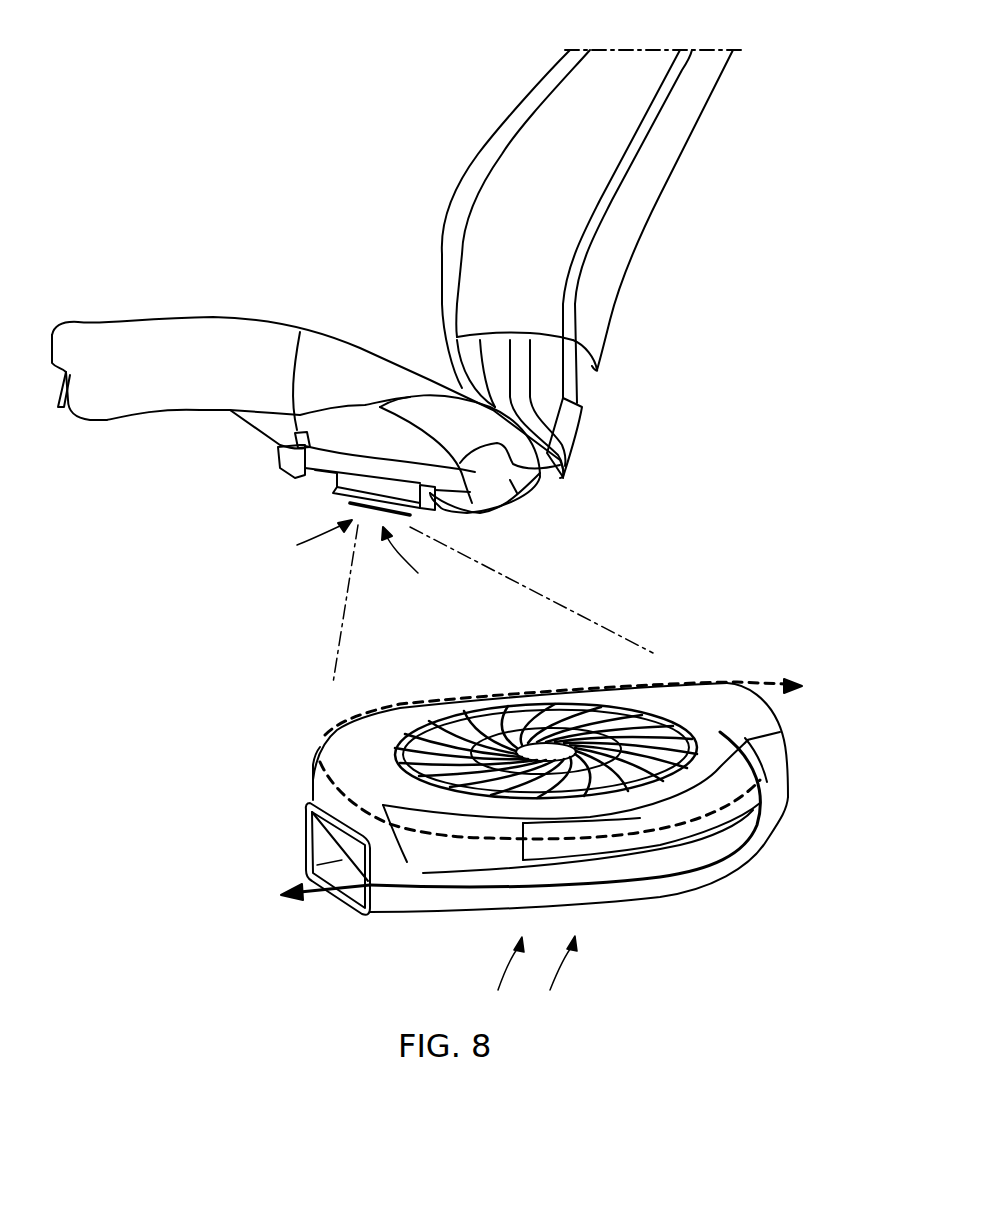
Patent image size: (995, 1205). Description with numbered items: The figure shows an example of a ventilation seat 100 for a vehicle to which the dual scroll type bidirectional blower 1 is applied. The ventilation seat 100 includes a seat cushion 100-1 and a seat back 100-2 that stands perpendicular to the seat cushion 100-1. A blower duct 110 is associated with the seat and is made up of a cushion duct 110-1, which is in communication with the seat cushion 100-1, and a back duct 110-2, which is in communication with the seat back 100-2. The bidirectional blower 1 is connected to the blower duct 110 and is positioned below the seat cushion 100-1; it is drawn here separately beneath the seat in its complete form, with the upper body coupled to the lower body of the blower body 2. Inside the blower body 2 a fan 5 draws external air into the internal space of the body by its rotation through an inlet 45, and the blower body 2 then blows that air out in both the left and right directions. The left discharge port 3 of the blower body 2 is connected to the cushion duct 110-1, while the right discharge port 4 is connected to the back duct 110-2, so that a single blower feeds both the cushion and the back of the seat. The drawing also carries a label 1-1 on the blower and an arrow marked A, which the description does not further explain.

The ventilation seat 100 is at (223, 213).
The seat cushion 100-1 is at (192, 327).
The seat back 100-2 is at (483, 167).
The blower duct 110 is at (365, 270).
The cushion duct 110-1 is at (300, 332).
The back duct 110-2 is at (380, 407).
The bidirectional blower 1 is at (347, 492).
The blower hub 1-1 is at (548, 750).
The blower body 2 is at (760, 852).
The left discharge port 3 is at (387, 903).
The right discharge port 4 is at (767, 723).
The fan 5 is at (450, 752).
The inlet 45 is at (597, 915).
The airflow direction A is at (767, 660).